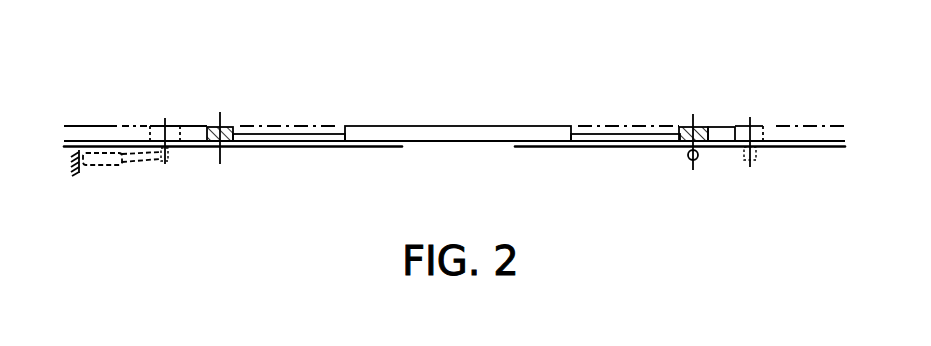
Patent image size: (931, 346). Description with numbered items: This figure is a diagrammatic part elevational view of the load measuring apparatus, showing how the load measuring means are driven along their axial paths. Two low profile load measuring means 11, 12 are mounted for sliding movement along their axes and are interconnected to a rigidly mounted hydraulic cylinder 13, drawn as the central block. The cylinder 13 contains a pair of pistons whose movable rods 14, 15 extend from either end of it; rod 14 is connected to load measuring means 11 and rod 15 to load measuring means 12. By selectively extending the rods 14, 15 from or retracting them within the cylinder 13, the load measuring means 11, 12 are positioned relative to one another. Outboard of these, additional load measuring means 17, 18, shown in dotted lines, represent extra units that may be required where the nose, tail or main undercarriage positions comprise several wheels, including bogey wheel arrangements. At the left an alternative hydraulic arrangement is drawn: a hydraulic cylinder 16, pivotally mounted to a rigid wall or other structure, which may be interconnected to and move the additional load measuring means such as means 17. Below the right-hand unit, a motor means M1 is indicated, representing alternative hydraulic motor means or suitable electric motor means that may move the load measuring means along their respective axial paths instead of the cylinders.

The load measuring means 11 is at (227, 127).
The load measuring means 12 is at (701, 127).
The hydraulic cylinder 13 is at (468, 132).
The movable rod 14 is at (297, 133).
The movable rod 15 is at (600, 133).
The hydraulic cylinder 16 is at (107, 165).
The load measuring means 17 is at (173, 132).
The load measuring means 18 is at (760, 125).
The electric motor means M1 is at (698, 157).